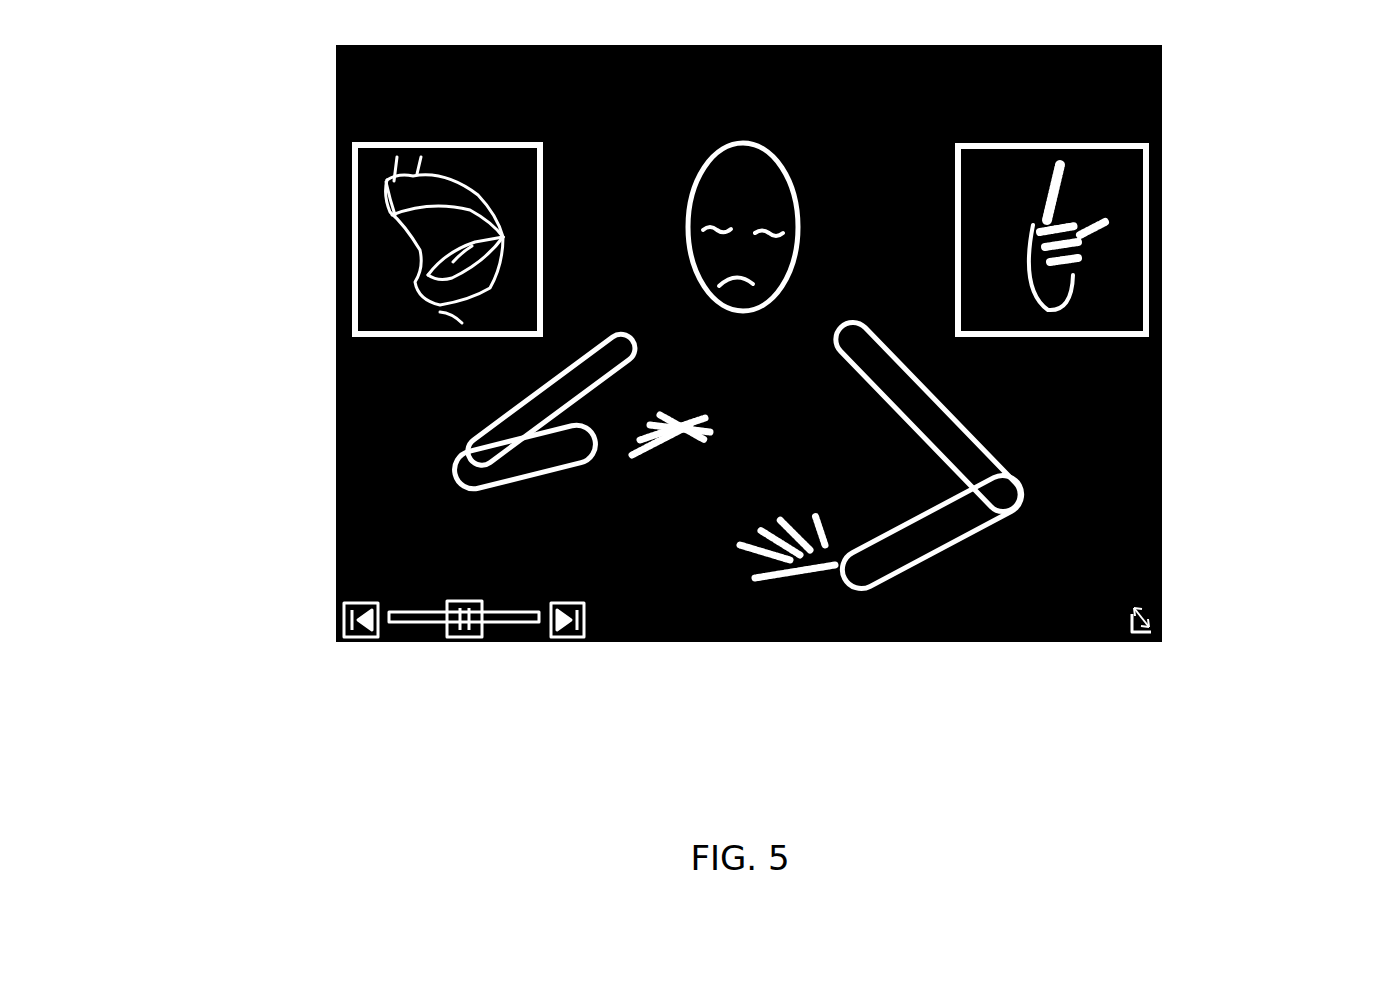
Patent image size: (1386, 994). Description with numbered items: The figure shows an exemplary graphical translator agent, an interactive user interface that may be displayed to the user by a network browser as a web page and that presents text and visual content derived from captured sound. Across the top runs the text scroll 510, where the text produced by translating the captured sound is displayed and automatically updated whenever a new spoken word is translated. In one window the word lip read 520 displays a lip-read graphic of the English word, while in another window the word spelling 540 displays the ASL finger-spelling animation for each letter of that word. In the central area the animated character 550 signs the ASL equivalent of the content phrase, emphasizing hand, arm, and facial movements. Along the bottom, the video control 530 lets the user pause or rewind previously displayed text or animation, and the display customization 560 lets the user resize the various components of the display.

The text scroll 510 is at (617, 98).
The word lip read 520 is at (308, 271).
The video control 530 is at (329, 547).
The word spelling 540 is at (1165, 200).
The animated character 550 is at (912, 369).
The display customization 560 is at (1096, 523).